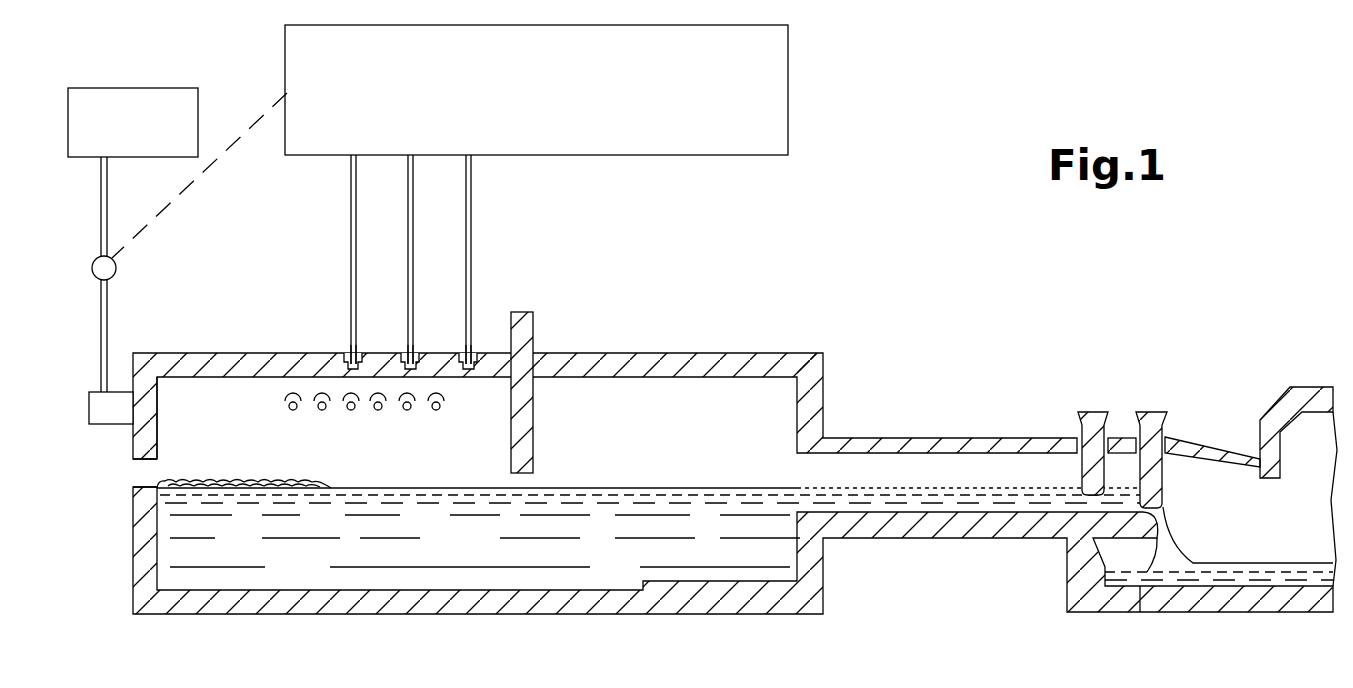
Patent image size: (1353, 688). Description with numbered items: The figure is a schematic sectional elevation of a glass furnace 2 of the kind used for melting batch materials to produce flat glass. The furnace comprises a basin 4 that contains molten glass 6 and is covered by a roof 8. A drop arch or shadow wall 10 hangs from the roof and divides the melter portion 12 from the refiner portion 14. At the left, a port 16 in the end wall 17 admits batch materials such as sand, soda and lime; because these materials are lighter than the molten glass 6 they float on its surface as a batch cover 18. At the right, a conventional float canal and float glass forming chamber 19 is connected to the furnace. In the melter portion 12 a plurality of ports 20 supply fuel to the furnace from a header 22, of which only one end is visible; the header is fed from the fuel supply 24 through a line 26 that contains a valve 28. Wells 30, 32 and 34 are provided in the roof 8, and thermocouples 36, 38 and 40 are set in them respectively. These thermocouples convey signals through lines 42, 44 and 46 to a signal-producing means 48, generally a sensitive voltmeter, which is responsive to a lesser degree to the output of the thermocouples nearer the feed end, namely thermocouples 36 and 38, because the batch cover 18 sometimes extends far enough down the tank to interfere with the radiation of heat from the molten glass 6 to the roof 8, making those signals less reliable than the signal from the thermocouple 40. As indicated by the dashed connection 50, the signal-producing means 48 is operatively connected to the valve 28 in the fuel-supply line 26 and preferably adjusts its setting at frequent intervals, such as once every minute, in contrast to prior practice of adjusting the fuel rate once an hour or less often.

The glass furnace 2 is at (673, 340).
The basin 4 is at (145, 551).
The molten glass 6 is at (496, 565).
The roof 8 is at (222, 353).
The drop arch or shadow wall 10 is at (533, 330).
The melter portion 12 is at (409, 470).
The refiner portion 14 is at (663, 449).
The port 16 is at (141, 487).
The end wall 17 is at (157, 432).
The batch cover 18 is at (226, 481).
The float canal and float glass forming chamber 19 is at (1131, 348).
The ports 20 is at (407, 412).
The header 22 is at (118, 424).
The fuel supply 24 is at (176, 88).
The line 26 is at (108, 326).
The valve 28 is at (116, 270).
The well 30 is at (350, 355).
The well 32 is at (403, 356).
The well 34 is at (462, 356).
The thermocouple 36 is at (361, 351).
The thermocouple 38 is at (420, 352).
The thermocouple 40 is at (478, 353).
The line 42 is at (350, 233).
The line 44 is at (408, 276).
The line 46 is at (471, 250).
The signal-producing means 48 is at (682, 156).
The operative connection 50 is at (183, 185).